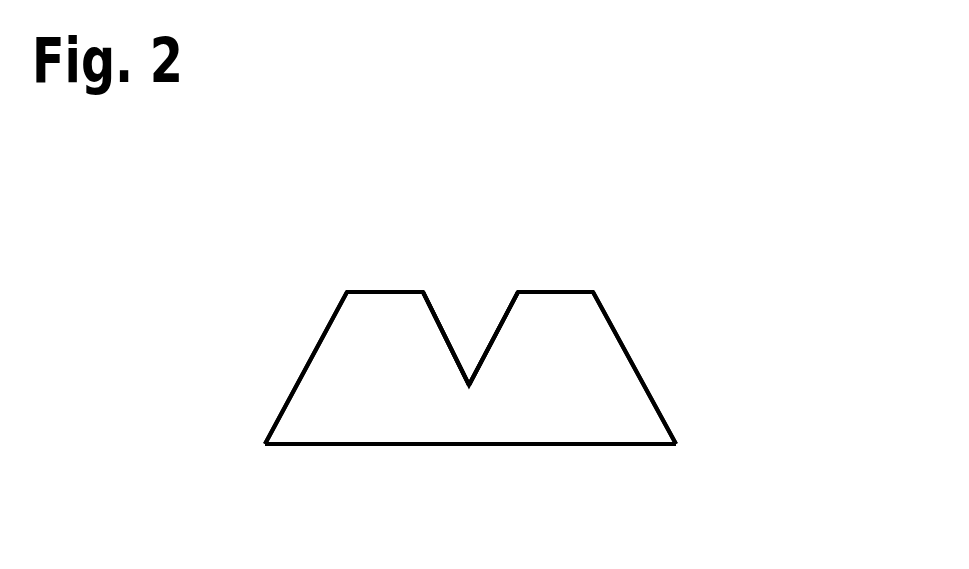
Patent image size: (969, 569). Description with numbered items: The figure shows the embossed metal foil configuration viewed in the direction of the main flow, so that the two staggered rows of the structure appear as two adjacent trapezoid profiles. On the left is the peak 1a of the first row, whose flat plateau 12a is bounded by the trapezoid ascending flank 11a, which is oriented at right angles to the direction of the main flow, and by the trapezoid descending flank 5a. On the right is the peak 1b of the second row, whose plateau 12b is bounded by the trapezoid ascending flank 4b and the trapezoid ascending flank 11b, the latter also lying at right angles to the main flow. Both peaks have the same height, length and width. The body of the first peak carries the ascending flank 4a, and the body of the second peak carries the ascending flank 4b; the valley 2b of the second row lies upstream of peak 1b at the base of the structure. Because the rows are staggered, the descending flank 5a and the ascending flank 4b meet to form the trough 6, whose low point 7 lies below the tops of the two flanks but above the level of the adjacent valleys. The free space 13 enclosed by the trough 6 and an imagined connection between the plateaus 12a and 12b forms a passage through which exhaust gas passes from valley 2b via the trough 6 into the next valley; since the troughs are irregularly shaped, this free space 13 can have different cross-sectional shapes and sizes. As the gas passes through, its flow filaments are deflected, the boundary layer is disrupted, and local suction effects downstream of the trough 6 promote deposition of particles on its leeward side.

The peak 1a is at (386, 206).
The peak 1b is at (578, 206).
The valley 2b is at (630, 445).
The ascending flank 4a is at (348, 410).
The ascending flank 4b is at (509, 305).
The descending flank 5a is at (438, 306).
The trough 6 is at (475, 287).
The low point 7 is at (469, 388).
The ascending flank 11a is at (317, 353).
The ascending flank 11b is at (620, 340).
The plateau 12a is at (368, 292).
The plateau 12b is at (578, 290).
The free space 13 is at (486, 342).